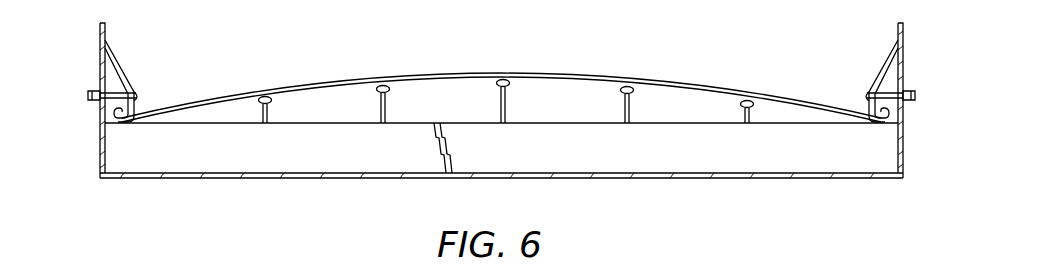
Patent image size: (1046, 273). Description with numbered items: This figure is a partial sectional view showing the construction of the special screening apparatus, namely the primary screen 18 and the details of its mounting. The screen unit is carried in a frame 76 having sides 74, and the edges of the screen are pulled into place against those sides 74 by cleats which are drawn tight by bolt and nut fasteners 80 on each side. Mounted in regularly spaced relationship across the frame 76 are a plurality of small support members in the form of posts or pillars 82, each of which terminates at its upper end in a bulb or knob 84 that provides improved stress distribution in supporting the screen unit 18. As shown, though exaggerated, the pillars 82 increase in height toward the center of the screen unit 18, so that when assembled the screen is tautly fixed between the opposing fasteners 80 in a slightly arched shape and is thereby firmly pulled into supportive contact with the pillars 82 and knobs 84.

The primary screen 18 is at (552, 55).
The sides 74 is at (101, 146).
The frame 76 is at (612, 180).
The bolt and nut fasteners 80 is at (140, 97).
The posts or pillars 82 is at (380, 108).
The bulb or knob 84 is at (389, 91).